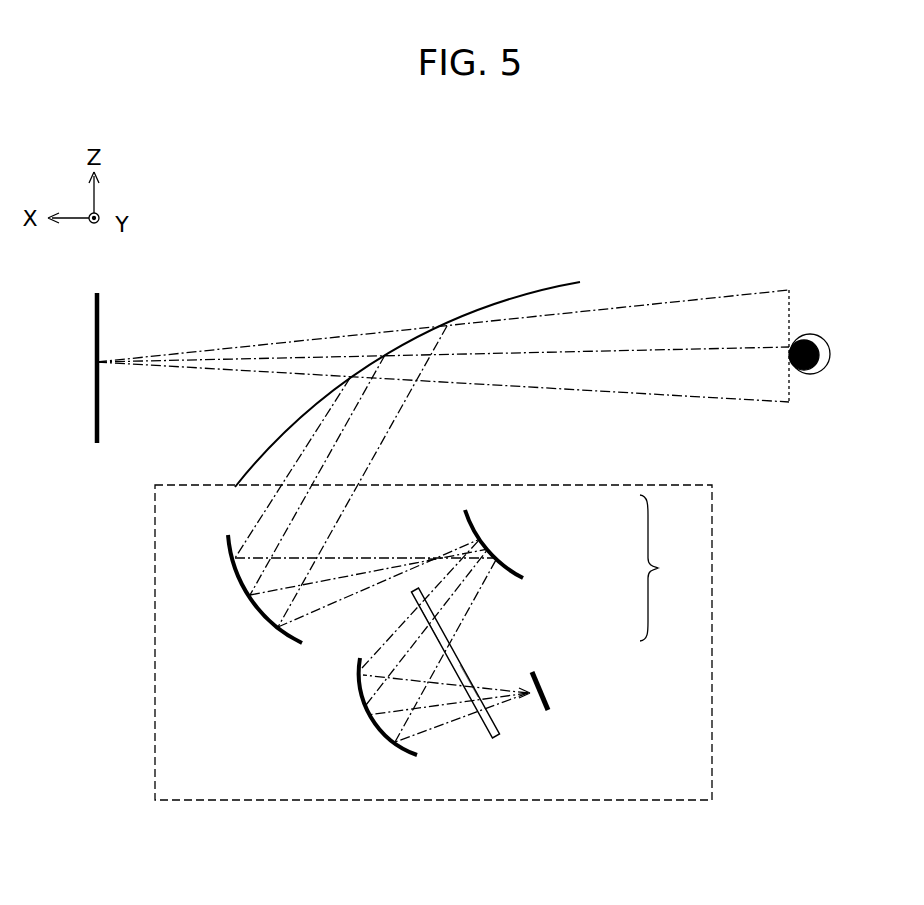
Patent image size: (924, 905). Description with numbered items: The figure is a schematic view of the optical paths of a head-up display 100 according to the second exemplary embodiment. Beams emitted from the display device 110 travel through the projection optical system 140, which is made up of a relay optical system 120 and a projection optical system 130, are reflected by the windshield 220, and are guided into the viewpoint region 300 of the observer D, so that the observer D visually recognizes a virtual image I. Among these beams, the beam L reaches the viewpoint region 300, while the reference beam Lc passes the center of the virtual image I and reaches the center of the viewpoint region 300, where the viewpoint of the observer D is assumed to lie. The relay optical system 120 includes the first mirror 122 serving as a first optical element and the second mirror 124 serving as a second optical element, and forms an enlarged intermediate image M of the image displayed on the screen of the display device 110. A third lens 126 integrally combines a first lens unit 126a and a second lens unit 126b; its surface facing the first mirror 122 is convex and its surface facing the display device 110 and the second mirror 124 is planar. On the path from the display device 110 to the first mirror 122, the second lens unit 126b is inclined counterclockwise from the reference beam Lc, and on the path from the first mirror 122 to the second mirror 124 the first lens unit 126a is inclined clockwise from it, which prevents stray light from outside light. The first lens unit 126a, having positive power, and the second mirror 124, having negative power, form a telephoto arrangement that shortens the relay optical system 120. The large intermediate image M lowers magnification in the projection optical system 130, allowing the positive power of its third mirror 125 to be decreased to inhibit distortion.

The head-up display 100 is at (714, 504).
The display device 110 is at (552, 702).
The relay optical system 120 is at (583, 637).
The first mirror 122 is at (358, 698).
The second mirror 124 is at (472, 515).
The third mirror 125 is at (258, 623).
The third lens 126 is at (500, 737).
The first lens unit 126a is at (428, 607).
The second lens unit 126b is at (482, 690).
The projection optical system 130 is at (559, 531).
The projection optical system 140 is at (675, 568).
The windshield 220 is at (512, 302).
The viewpoint region 300 is at (793, 302).
The observer D is at (830, 357).
The virtual image I is at (103, 312).
The beam L is at (637, 305).
The reference beam Lc is at (252, 360).
The intermediate image M is at (433, 570).